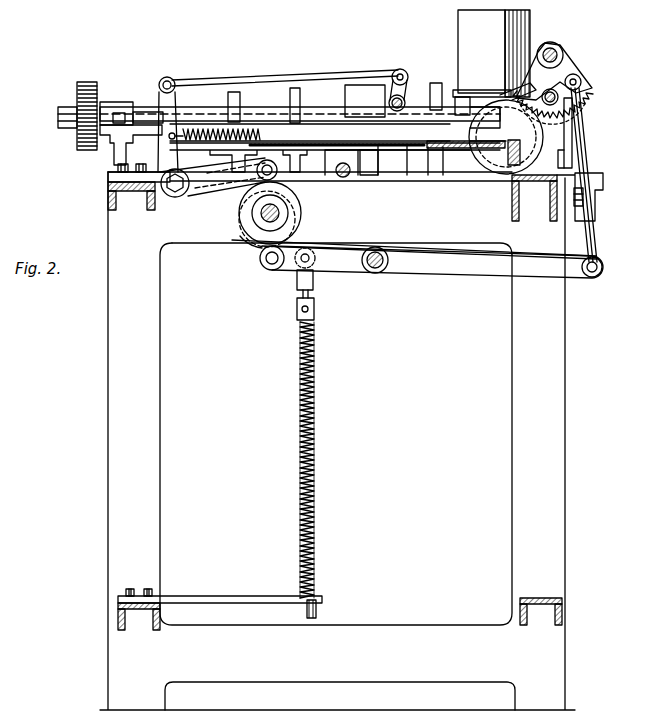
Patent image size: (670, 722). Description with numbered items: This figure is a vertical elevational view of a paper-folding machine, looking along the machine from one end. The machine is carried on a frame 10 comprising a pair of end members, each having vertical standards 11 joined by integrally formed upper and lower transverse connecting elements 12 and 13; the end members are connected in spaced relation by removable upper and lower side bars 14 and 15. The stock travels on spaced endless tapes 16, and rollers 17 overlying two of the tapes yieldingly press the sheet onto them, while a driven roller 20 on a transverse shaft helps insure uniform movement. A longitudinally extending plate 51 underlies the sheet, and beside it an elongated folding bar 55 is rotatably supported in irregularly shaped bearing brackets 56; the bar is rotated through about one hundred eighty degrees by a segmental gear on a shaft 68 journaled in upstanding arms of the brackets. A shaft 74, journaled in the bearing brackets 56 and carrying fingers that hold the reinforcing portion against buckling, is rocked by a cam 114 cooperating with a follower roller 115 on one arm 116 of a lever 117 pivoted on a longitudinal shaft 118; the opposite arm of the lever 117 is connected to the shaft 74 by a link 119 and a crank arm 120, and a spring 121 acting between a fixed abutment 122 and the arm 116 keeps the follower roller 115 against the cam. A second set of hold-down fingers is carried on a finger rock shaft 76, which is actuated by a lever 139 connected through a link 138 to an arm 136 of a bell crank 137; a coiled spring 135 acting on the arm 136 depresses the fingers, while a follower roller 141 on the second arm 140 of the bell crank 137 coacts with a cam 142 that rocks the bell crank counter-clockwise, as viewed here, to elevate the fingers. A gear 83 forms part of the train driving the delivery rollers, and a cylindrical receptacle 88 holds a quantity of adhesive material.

The frame 10 is at (101, 418).
The vertical standards 11 is at (145, 447).
The upper transverse connecting element 12 is at (202, 234).
The lower transverse connecting element 13 is at (397, 628).
The upper side bar 14 is at (107, 201).
The lower side bar 15 is at (116, 607).
The endless tapes 16 is at (403, 148).
The rollers 17 is at (383, 148).
The driven roller 20 is at (281, 216).
The plate 51 is at (430, 148).
The folding bar 55 is at (493, 157).
The bearing brackets 56 is at (557, 142).
The shaft 68 is at (556, 44).
The shaft 74 is at (582, 107).
The finger rock shaft 76 is at (403, 98).
The gear 83 is at (336, 168).
The cylindrical receptacle 88 is at (462, 33).
The cam 114 is at (255, 247).
The follower roller 115 is at (275, 272).
The arm 116 is at (333, 264).
The lever 117 is at (405, 272).
The shaft 118 is at (375, 274).
The link 119 is at (583, 156).
The crank arm 120 is at (576, 73).
The spring 121 is at (315, 410).
The fixed abutment 122 is at (248, 596).
The coiled spring 135 is at (192, 132).
The arm 136 is at (162, 100).
The bell crank 137 is at (160, 153).
The link 138 is at (297, 78).
The lever 139 is at (393, 72).
The second arm 140 is at (196, 190).
The follower roller 141 is at (276, 179).
The cam 142 is at (240, 198).